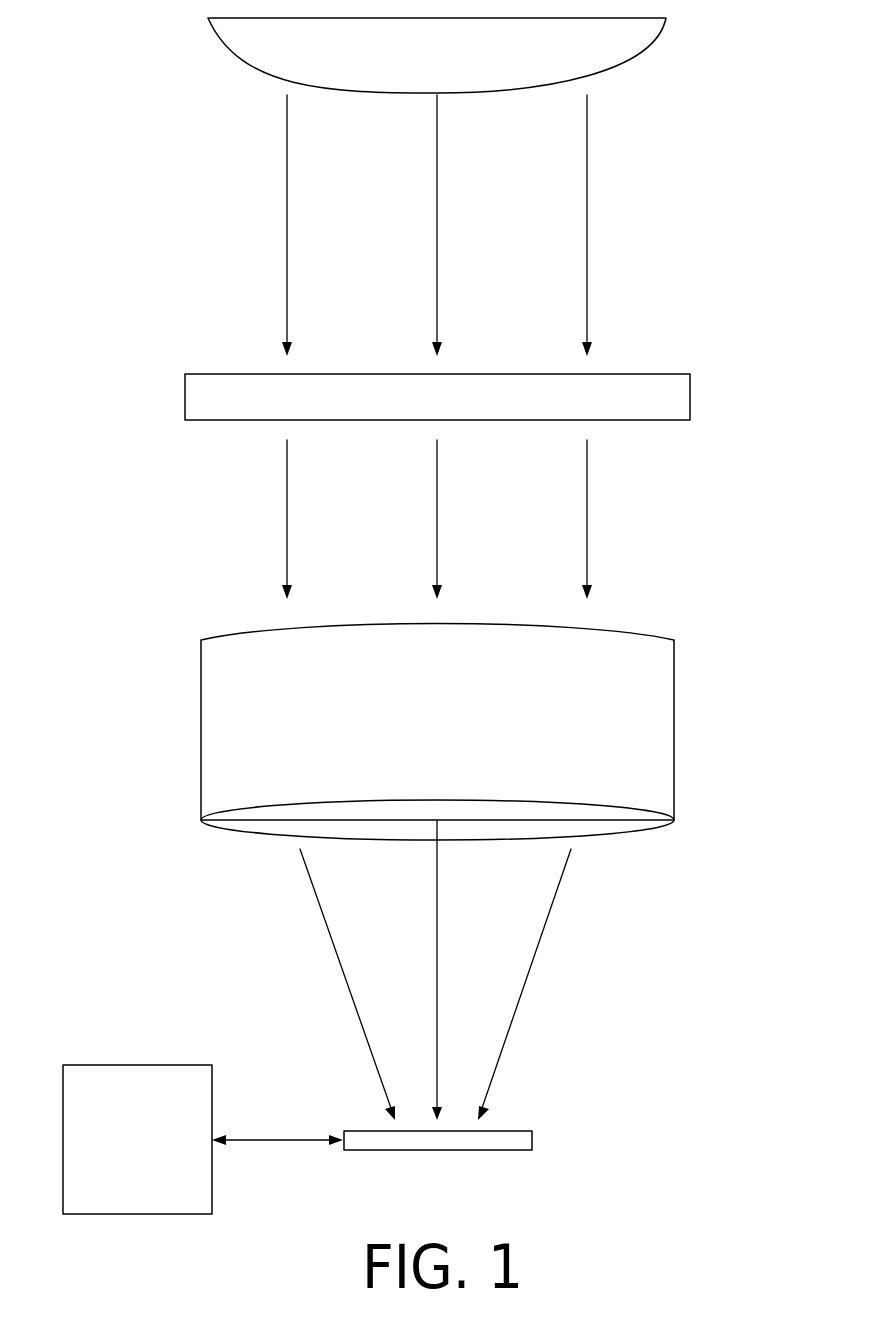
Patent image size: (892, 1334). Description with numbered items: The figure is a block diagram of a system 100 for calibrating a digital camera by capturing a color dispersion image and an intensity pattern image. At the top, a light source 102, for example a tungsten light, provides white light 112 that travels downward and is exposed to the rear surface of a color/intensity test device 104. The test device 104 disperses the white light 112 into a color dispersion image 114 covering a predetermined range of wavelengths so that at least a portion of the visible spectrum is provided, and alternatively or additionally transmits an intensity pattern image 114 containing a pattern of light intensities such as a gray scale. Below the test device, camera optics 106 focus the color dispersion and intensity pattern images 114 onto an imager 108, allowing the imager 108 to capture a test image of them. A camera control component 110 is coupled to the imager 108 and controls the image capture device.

The system 100 is at (87, 140).
The light source 102 is at (615, 45).
The color/intensity test device 104 is at (203, 392).
The optics 106 is at (651, 719).
The imager 108 is at (512, 1140).
The camera control component 110 is at (137, 1065).
The white light 112 is at (710, 244).
The color dispersion image / intensity pattern image 114 is at (710, 544).